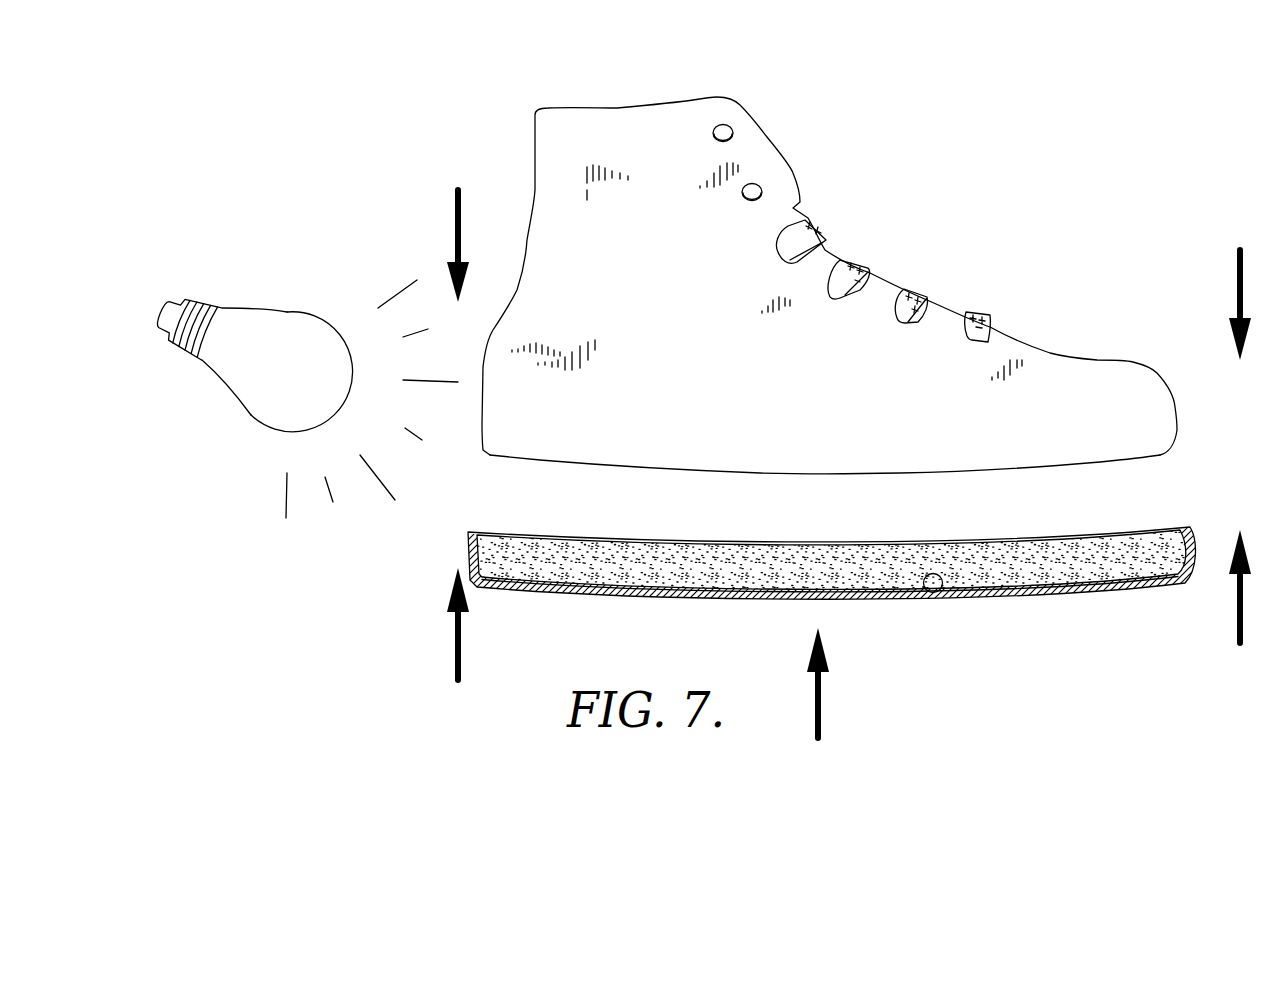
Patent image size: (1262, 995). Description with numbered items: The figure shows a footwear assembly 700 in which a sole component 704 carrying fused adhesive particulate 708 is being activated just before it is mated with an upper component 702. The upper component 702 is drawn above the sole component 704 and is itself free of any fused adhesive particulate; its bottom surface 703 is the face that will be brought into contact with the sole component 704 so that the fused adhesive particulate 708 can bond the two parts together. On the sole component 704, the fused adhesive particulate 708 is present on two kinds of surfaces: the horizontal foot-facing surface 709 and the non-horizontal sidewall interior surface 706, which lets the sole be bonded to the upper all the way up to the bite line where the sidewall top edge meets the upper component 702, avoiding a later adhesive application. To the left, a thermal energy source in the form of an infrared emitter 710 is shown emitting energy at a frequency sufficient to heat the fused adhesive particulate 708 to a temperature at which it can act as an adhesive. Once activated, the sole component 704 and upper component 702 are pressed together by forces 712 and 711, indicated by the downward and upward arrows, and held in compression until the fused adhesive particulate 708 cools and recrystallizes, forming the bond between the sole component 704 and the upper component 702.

The footwear system 700 is at (294, 90).
The upper component 702 is at (1103, 402).
The bottom surface 703 is at (1122, 464).
The sole component 704 is at (594, 597).
The sidewall interior surface 706 is at (552, 551).
The fused adhesive particulate 708 is at (935, 592).
The foot-facing surface 709 is at (764, 599).
The infrared emitter 710 is at (308, 309).
The force 711 is at (814, 710).
The force 712 is at (454, 210).